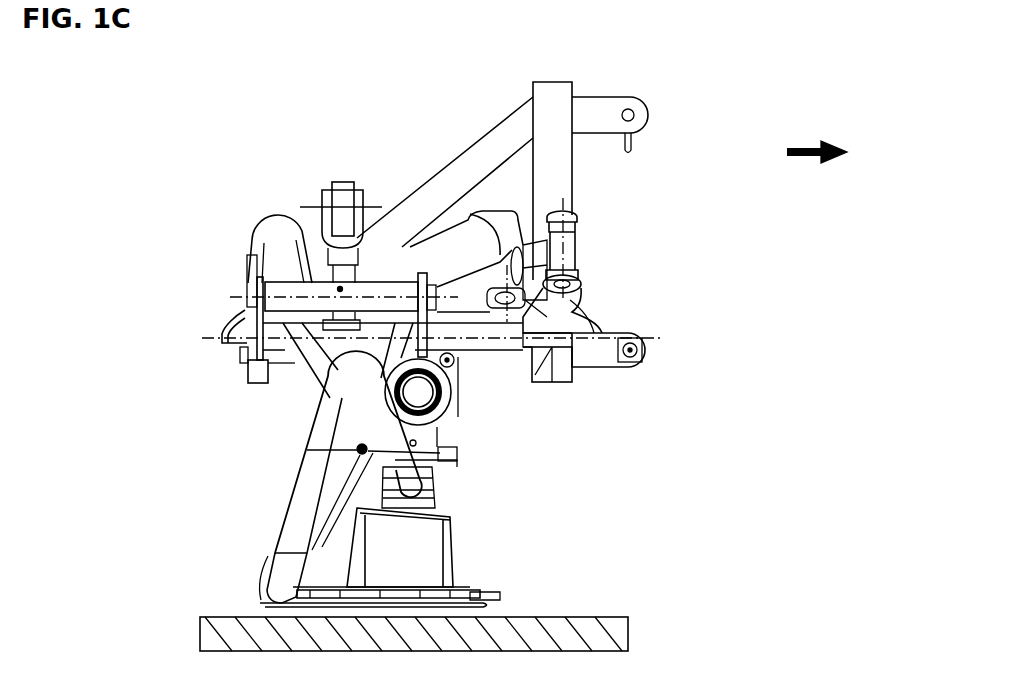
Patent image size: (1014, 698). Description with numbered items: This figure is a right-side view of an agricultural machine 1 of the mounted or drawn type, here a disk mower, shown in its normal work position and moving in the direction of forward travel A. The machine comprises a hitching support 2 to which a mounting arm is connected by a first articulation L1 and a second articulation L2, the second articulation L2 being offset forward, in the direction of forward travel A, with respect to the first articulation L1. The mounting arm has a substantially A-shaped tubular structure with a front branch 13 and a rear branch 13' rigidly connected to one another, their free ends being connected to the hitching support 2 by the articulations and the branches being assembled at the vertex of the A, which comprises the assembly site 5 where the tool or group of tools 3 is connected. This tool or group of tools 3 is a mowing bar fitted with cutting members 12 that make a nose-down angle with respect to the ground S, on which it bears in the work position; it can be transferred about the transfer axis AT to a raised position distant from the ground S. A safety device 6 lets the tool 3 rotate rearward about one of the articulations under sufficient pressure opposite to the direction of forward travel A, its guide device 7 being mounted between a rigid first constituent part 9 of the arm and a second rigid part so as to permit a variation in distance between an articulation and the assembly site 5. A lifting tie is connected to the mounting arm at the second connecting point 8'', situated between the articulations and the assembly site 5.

The agricultural machine 1 is at (814, 465).
The hitching support 2 is at (552, 100).
The tool or group of tools 3 is at (528, 590).
The assembly site 5 is at (236, 282).
The safety device 6 is at (253, 132).
The guide device 7 is at (594, 244).
The first constituent part 9 is at (556, 328).
The cutting members 12 is at (492, 598).
The front branch 13 is at (478, 179).
The rear branch 13' is at (280, 217).
The second connecting point 8'' is at (341, 214).
The first articulation L1 is at (238, 377).
The second articulation L2 is at (583, 362).
The transfer axis AT is at (481, 338).
The ground S is at (214, 606).
The direction of forward travel A is at (817, 135).